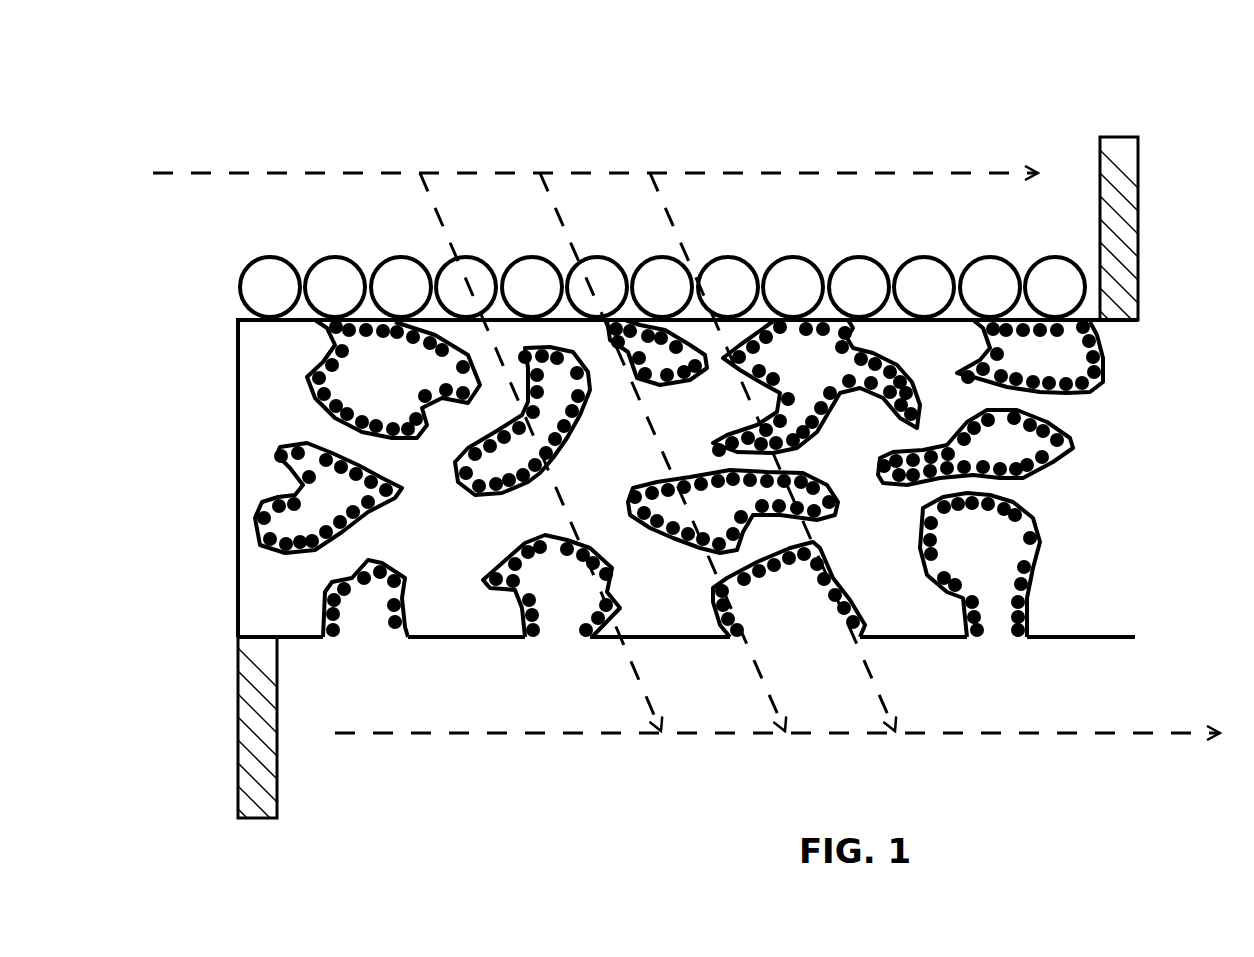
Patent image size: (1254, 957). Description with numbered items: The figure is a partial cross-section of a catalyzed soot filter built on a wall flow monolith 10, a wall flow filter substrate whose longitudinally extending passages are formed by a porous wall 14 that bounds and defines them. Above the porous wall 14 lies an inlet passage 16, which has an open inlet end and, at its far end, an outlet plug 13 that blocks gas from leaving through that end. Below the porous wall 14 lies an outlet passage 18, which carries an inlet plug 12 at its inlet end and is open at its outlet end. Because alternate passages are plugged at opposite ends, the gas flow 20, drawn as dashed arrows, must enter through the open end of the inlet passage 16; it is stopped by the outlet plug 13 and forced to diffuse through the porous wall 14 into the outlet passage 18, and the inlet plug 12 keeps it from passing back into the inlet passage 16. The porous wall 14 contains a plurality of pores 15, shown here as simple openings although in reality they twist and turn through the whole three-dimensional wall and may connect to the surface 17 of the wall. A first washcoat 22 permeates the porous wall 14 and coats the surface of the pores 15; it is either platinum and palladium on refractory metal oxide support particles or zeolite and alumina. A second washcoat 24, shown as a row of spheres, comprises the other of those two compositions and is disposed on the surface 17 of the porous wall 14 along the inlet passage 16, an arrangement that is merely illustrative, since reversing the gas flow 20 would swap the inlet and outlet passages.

The wall flow monolith 10 is at (348, 86).
The inlet plug 12 is at (252, 747).
The outlet plug 13 is at (265, 262).
The porous wall 14 is at (264, 582).
The pores 15 is at (352, 379).
The inlet passage 16 is at (325, 158).
The surface of the porous wall 17 is at (228, 314).
The outlet passage 18 is at (937, 743).
The gas flow 20 is at (467, 172).
The first washcoat 22 is at (337, 638).
The second washcoat 24 is at (394, 322).